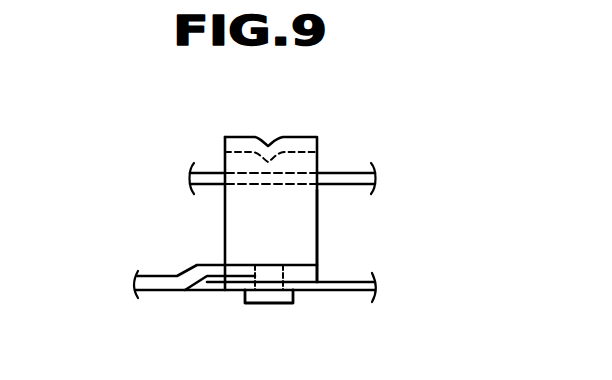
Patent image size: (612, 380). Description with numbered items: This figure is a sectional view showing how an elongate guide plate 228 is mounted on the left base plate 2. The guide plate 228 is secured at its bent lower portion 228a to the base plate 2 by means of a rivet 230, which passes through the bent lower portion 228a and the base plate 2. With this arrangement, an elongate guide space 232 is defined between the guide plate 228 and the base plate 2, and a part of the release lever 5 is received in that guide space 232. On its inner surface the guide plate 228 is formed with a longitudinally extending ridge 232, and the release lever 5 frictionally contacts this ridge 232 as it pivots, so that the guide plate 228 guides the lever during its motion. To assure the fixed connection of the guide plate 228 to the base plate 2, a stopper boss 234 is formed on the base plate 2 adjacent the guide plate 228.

The base plate 2 is at (353, 292).
The release lever 5 is at (352, 172).
The guide plate 228 is at (223, 164).
The bent lower portion 228a is at (312, 218).
The rivet 230 is at (273, 297).
The guide space / ridge 232 is at (268, 145).
The stopper boss 234 is at (212, 267).